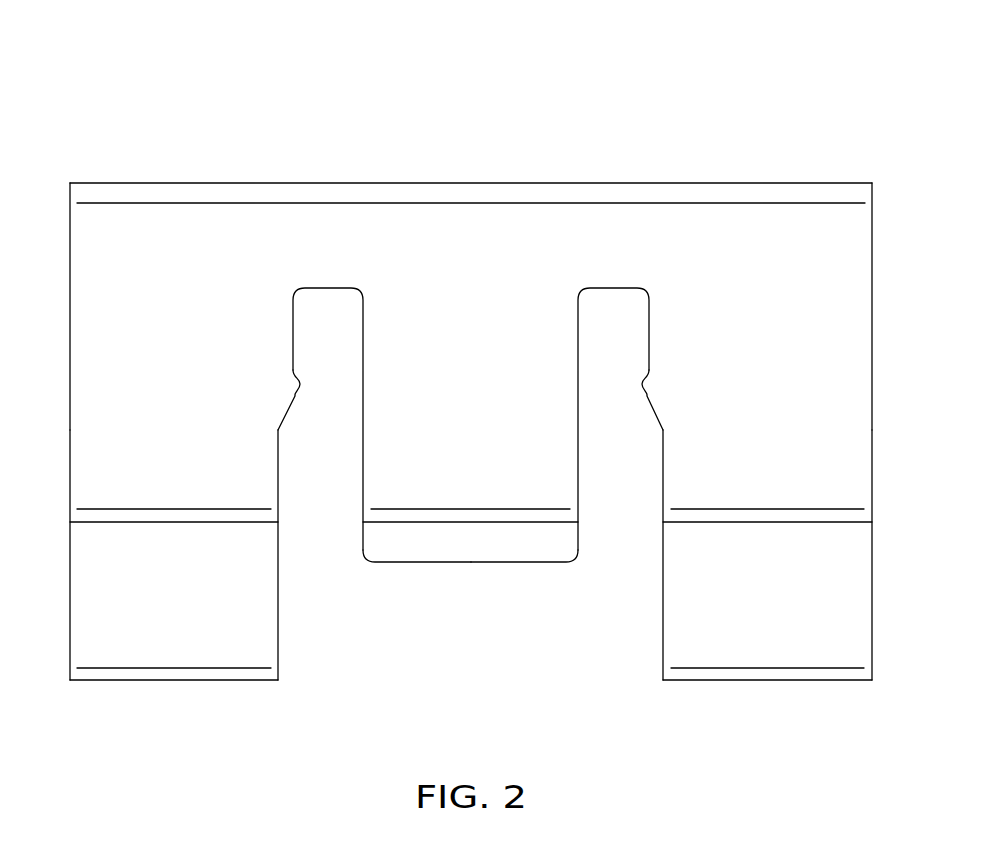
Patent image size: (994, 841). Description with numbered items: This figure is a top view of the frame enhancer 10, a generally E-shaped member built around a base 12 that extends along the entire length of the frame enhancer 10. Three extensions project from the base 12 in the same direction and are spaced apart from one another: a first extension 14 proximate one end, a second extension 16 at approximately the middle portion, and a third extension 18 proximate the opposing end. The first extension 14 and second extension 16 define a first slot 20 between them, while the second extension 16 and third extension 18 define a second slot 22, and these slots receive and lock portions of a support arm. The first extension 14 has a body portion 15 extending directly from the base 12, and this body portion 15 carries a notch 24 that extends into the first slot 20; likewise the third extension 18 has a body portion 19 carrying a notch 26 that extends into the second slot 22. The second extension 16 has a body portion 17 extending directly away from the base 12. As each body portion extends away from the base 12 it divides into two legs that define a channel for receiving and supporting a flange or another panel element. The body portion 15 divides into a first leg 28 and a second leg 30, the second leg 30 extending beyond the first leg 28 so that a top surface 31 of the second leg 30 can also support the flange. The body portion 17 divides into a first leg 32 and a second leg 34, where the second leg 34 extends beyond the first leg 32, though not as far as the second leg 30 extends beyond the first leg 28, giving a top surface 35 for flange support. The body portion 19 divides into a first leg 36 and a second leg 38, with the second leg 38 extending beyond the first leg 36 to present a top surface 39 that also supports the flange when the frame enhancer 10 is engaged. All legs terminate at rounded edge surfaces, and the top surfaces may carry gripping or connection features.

The frame enhancer 10 is at (154, 89).
The base 12 is at (268, 222).
The first extension 14 is at (91, 427).
The body portion 15 is at (91, 355).
The second extension 16 is at (512, 382).
The body portion 17 is at (396, 312).
The third extension 18 is at (850, 407).
The body portion 19 is at (856, 340).
The first slot 20 is at (327, 310).
The second slot 22 is at (607, 310).
The notch 24 is at (290, 388).
The notch 26 is at (652, 388).
The first leg 28 is at (91, 497).
The second leg 30 is at (91, 620).
The top surface 31 is at (270, 600).
The first leg 32 is at (530, 498).
The second leg 34 is at (425, 550).
The top surface 35 is at (530, 548).
The first leg 36 is at (848, 498).
The second leg 38 is at (848, 657).
The top surface 39 is at (672, 627).